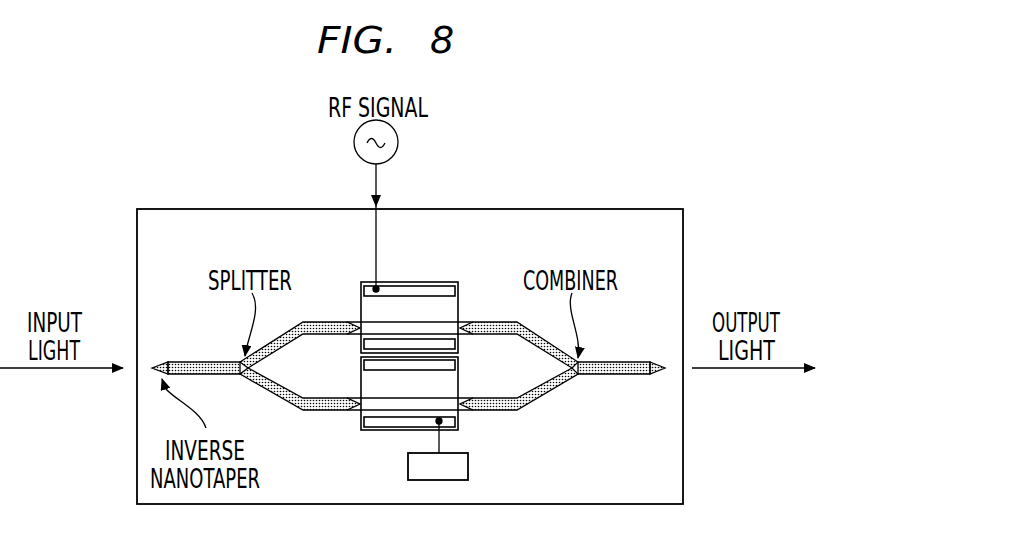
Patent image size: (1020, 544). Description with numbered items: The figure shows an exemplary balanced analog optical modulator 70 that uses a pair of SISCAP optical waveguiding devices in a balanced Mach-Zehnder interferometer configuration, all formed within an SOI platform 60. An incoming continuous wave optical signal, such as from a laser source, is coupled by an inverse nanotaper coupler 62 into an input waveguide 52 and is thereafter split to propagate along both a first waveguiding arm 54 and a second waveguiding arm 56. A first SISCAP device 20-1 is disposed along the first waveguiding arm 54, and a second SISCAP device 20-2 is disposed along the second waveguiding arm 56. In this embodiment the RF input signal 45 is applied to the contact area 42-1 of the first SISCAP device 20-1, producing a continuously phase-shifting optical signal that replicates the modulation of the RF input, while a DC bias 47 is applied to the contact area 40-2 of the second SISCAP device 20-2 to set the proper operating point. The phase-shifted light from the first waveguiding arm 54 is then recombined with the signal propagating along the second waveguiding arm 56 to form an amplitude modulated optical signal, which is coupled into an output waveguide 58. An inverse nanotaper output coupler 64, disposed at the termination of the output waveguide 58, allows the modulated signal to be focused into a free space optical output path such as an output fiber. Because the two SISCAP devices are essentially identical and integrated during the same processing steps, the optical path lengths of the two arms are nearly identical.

The balanced analog optical modulator 70 is at (620, 180).
The SOI platform 60 is at (190, 208).
The RF input signal 45 is at (398, 142).
The DC bias 47 is at (470, 467).
The first SISCAP device 20-1 is at (394, 274).
The second SISCAP device 20-2 is at (382, 433).
The contact area 42-1 is at (434, 287).
The contact area 40-2 is at (455, 418).
The input waveguide 52 is at (210, 360).
The inverse nanotaper coupler 62 is at (164, 360).
The first waveguiding arm 54 is at (338, 321).
The second waveguiding arm 56 is at (322, 410).
The output waveguide 58 is at (612, 375).
The inverse nanotaper output coupler 64 is at (660, 361).